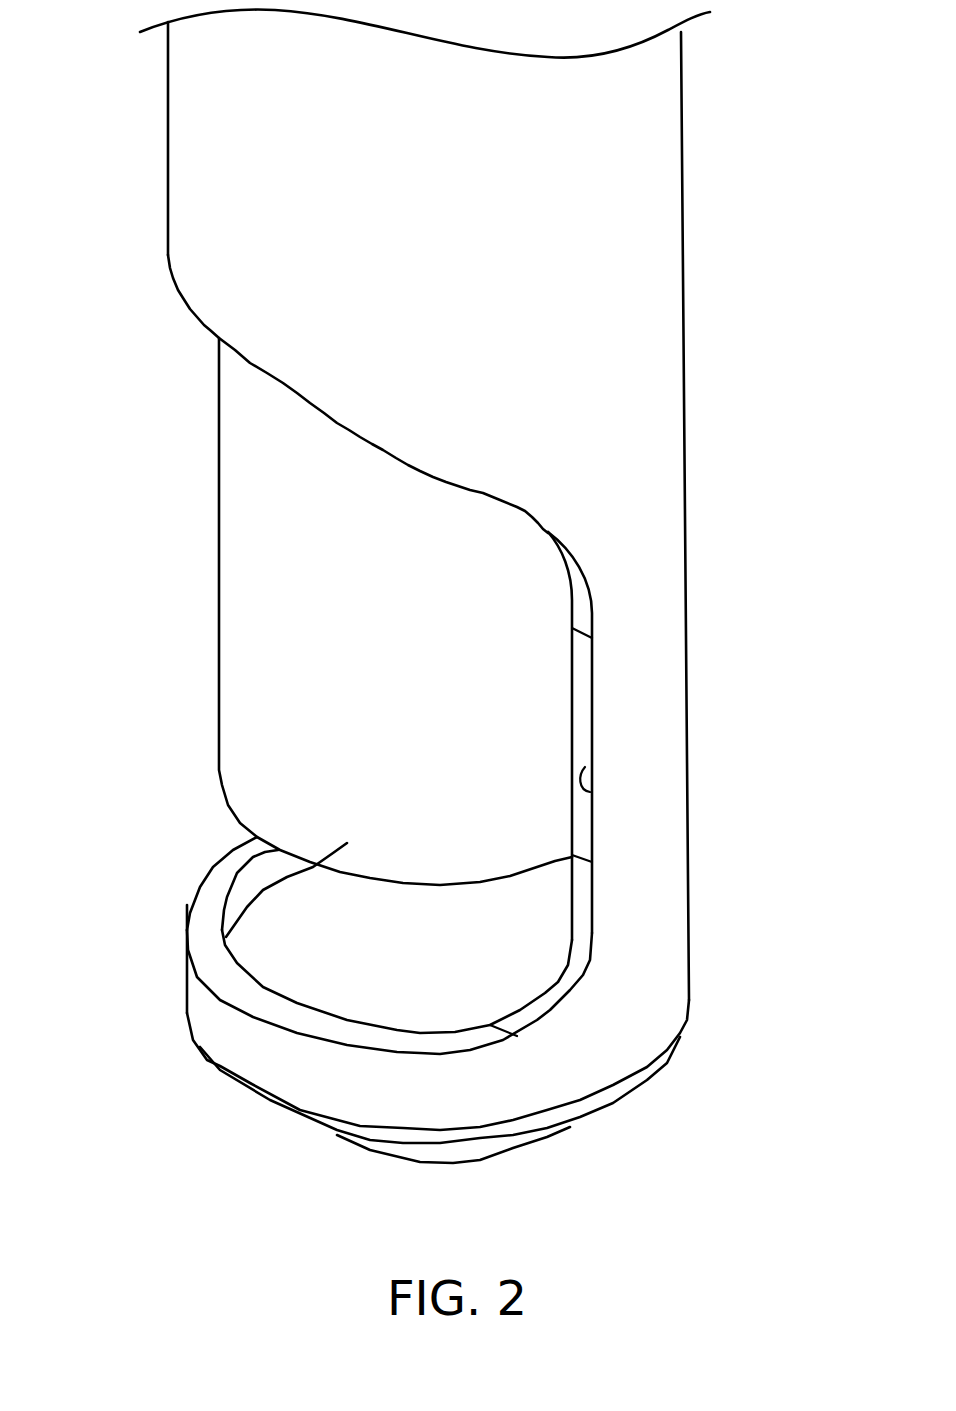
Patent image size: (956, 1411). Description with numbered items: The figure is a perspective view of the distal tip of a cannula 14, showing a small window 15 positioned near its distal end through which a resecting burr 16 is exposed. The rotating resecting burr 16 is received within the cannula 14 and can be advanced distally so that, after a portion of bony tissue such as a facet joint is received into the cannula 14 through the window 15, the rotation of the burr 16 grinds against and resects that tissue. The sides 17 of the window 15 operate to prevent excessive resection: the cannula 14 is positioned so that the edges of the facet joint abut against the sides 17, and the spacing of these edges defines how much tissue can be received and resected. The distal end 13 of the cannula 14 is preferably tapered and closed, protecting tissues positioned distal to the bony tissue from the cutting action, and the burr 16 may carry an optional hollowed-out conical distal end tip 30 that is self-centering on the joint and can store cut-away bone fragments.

The distal end 13 is at (605, 1170).
The cannula 14 is at (184, 157).
The window 15 is at (176, 518).
The resecting burr 16 is at (249, 656).
The sides of window 17 is at (592, 791).
The conical distal end tip 30 is at (313, 880).